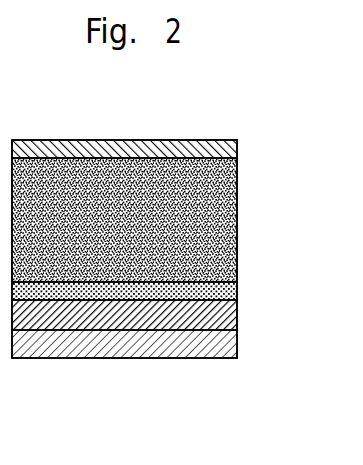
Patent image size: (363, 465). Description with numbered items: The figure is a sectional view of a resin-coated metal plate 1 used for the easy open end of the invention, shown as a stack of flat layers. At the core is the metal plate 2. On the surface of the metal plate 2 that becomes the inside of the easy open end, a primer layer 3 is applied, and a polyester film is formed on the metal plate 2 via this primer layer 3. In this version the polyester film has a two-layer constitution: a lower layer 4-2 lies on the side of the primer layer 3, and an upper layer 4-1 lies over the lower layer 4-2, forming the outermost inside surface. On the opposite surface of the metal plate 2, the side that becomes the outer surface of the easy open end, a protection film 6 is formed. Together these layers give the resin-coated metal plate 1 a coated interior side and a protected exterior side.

The resin-coated metal plate 1 is at (203, 130).
The protection film 6 is at (217, 143).
The metal plate 2 is at (237, 217).
The primer layer 3 is at (215, 285).
The lower layer 4-2 is at (215, 311).
The upper layer 4-1 is at (215, 338).